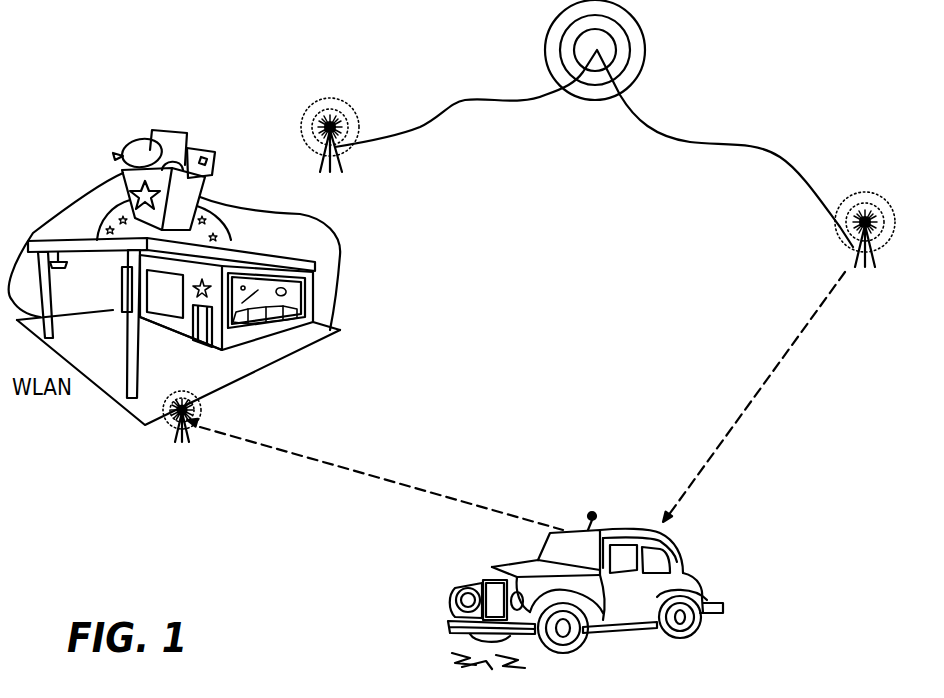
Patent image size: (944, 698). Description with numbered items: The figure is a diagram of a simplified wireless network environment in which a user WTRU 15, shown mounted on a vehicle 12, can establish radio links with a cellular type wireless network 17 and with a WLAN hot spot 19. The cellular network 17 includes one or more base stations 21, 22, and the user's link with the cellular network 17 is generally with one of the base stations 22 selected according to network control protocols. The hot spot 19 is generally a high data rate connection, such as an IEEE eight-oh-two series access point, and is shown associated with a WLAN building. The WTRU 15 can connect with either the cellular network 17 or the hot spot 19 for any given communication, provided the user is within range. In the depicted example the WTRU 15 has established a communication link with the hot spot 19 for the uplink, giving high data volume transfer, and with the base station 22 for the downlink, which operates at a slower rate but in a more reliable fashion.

The vehicle 12 is at (452, 602).
The WTRU 15 is at (587, 530).
The cellular type wireless network 17 is at (547, 35).
The hot spot 19 is at (197, 406).
The base station 21 is at (335, 97).
The base station 22 is at (865, 207).